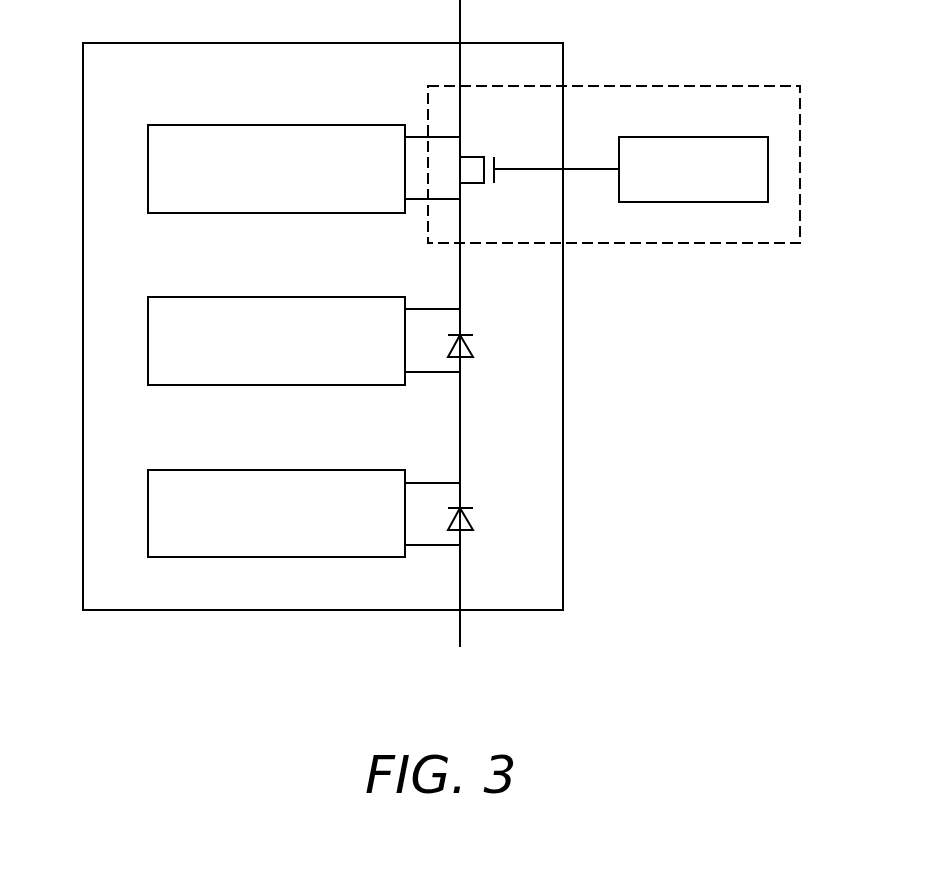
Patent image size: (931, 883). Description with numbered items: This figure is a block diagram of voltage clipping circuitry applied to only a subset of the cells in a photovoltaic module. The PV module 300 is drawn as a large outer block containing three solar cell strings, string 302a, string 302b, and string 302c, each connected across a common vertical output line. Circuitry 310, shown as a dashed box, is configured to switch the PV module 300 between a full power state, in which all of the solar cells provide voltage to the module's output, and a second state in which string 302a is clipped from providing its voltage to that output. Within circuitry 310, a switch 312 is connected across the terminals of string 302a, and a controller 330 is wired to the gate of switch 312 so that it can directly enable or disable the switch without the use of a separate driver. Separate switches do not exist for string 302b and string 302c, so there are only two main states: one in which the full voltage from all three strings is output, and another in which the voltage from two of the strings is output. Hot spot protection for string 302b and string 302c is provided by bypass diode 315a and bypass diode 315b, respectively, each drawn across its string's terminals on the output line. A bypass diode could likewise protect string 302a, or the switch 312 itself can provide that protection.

The PV module 300 is at (147, 74).
The string 302a is at (303, 178).
The string 302b is at (303, 350).
The string 302c is at (303, 523).
The circuitry 310 is at (773, 120).
The switch 312 is at (470, 156).
The bypass diode 315a is at (462, 333).
The bypass diode 315b is at (462, 505).
The controller 330 is at (718, 176).